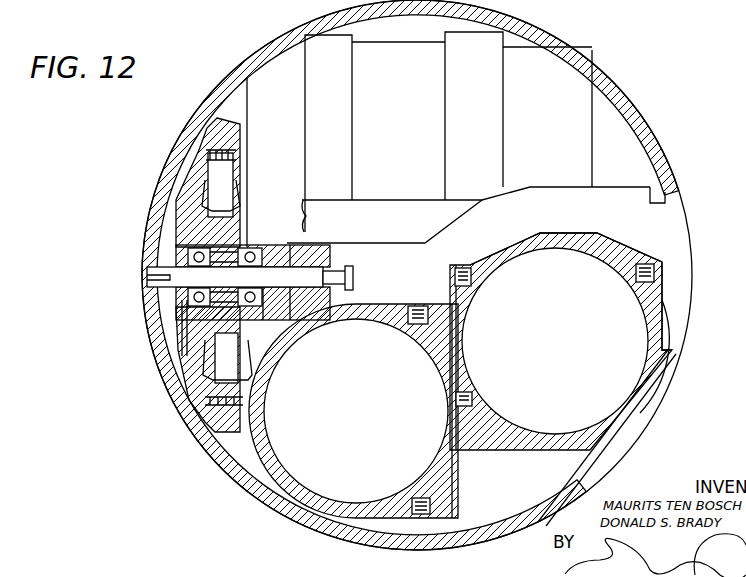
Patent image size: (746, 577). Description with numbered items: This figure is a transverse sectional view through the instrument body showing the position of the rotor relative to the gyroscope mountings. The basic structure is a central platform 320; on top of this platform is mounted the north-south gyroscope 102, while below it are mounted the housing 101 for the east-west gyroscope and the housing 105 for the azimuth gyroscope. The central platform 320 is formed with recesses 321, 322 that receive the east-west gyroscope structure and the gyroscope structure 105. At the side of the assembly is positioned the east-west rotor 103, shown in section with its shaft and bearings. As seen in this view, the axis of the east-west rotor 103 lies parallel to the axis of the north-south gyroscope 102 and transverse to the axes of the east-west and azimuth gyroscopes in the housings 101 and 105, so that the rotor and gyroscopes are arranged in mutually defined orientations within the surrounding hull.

The housing for the east-west gyroscope 101 is at (250, 468).
The north-south gyroscope 102 is at (540, 68).
The east-west rotor 103 is at (228, 135).
The housing for the azimuth gyroscope 105 is at (633, 297).
The central platform 320 is at (662, 228).
The recess 321 is at (358, 297).
The recess 322 is at (538, 233).